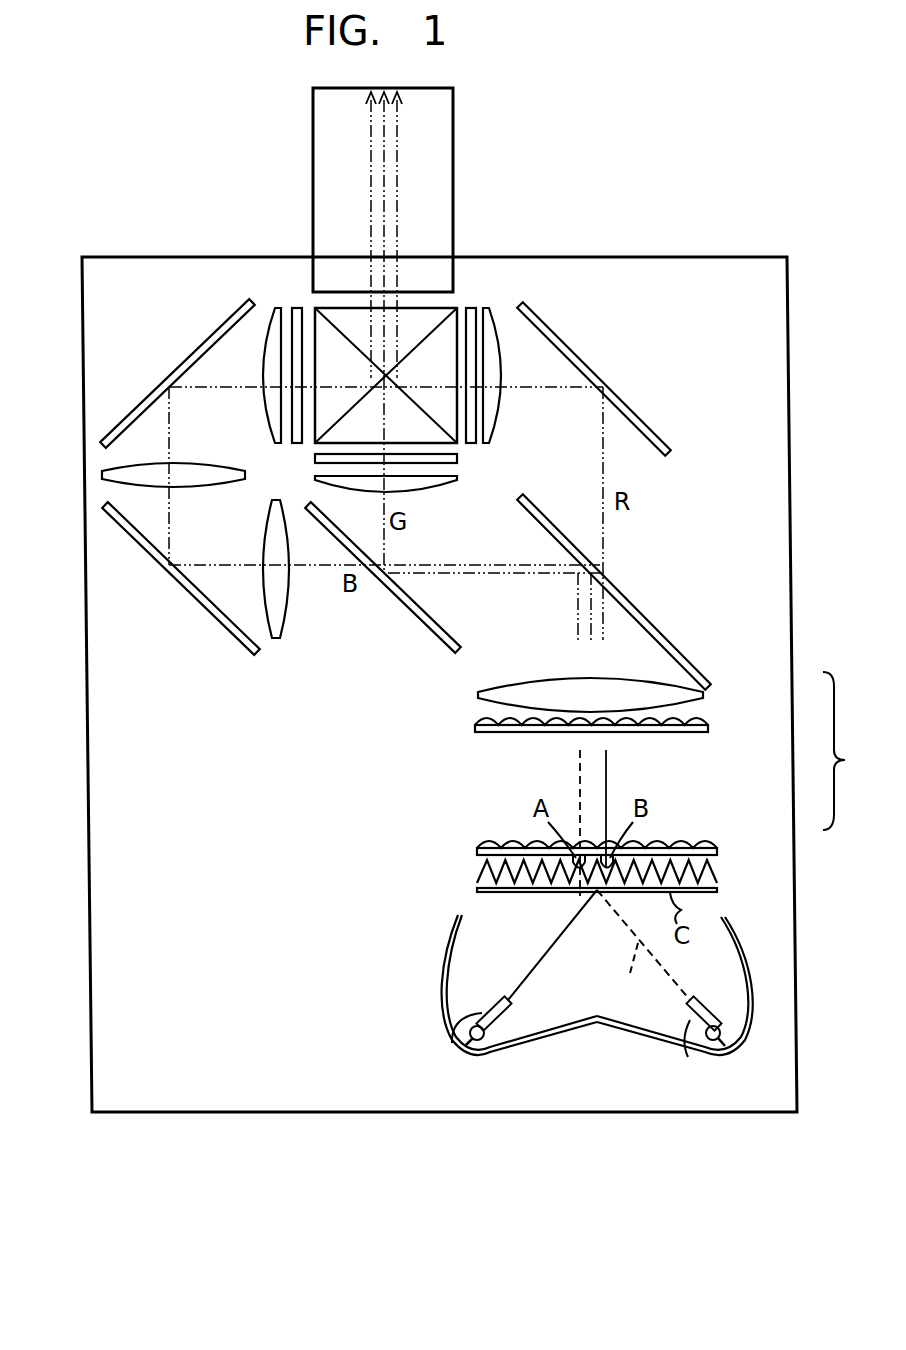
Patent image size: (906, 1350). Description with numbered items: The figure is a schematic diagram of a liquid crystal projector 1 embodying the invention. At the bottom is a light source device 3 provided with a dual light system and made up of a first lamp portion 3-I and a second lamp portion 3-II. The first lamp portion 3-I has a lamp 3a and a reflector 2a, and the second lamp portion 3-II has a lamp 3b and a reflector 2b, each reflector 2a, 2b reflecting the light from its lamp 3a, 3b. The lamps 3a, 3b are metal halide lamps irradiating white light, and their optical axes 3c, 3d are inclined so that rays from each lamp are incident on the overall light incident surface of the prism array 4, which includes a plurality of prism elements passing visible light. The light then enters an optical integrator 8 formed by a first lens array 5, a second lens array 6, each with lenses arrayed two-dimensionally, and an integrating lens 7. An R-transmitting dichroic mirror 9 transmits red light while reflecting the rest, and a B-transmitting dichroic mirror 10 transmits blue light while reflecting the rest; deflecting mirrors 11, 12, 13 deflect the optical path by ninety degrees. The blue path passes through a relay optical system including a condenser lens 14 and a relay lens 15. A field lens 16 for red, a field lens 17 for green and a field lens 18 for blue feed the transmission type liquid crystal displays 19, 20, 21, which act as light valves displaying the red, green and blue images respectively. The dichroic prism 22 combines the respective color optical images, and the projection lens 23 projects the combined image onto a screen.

The liquid crystal projector 1 is at (654, 242).
The reflector 2a is at (742, 1046).
The reflector 2b is at (502, 1058).
The light source device 3 is at (600, 1030).
The lamp 3a is at (694, 1057).
The lamp 3b is at (466, 1040).
The optical axis 3c is at (643, 947).
The optical axis 3d is at (541, 958).
The first lamp portion 3-I is at (750, 960).
The second lamp portion 3-II is at (433, 998).
The prism array 4 is at (705, 884).
The first lens array 5 is at (700, 845).
The second lens array 6 is at (700, 722).
The integrating lens 7 is at (688, 699).
The optical integrator 8 is at (844, 751).
The R-transmitting dichroic mirror 9 is at (646, 622).
The B-transmitting dichroic mirror 10 is at (395, 598).
The deflecting mirror 11 is at (652, 424).
The deflecting mirror 12 is at (121, 535).
The deflecting mirror 13 is at (201, 362).
The condenser lens 14 is at (264, 544).
The relay lens 15 is at (108, 470).
The field lens 16 is at (501, 396).
The field lens 17 is at (457, 482).
The field lens 18 is at (270, 310).
The transmission type liquid crystal display 19 is at (469, 307).
The transmission type liquid crystal display 20 is at (315, 455).
The transmission type liquid crystal display 21 is at (298, 308).
The dichroic prism 22 is at (445, 307).
The projection lens 23 is at (432, 128).